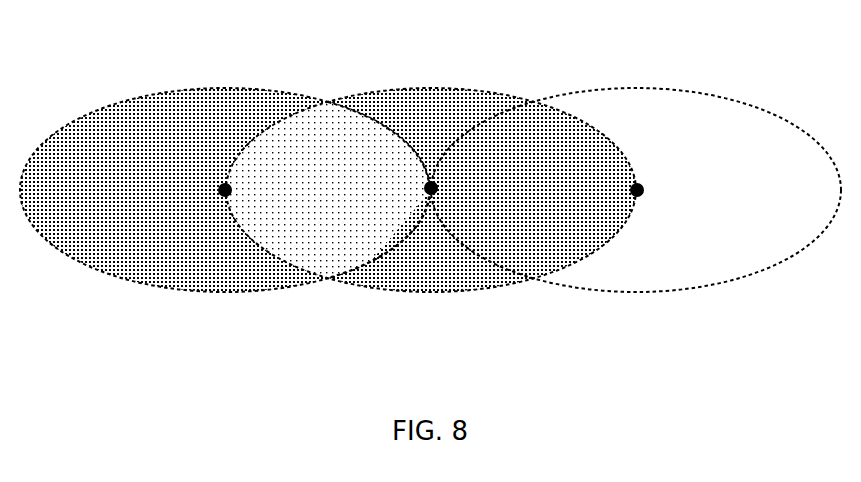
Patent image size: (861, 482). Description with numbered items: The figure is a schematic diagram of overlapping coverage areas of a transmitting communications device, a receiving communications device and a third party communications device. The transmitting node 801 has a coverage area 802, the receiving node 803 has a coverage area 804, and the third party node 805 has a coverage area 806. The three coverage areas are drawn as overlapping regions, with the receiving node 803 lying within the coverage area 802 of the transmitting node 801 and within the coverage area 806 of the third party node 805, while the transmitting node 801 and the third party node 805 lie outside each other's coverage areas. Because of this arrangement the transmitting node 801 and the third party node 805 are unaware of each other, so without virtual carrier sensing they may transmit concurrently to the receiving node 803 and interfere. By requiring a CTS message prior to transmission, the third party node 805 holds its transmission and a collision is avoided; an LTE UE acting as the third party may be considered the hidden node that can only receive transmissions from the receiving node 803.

The transmitting node 801 is at (222, 191).
The coverage area of the transmitting node 802 is at (185, 88).
The receiving node 803 is at (428, 190).
The coverage area of the receiving node 804 is at (427, 87).
The third party node 805 is at (634, 190).
The coverage area of the third party node 806 is at (673, 88).